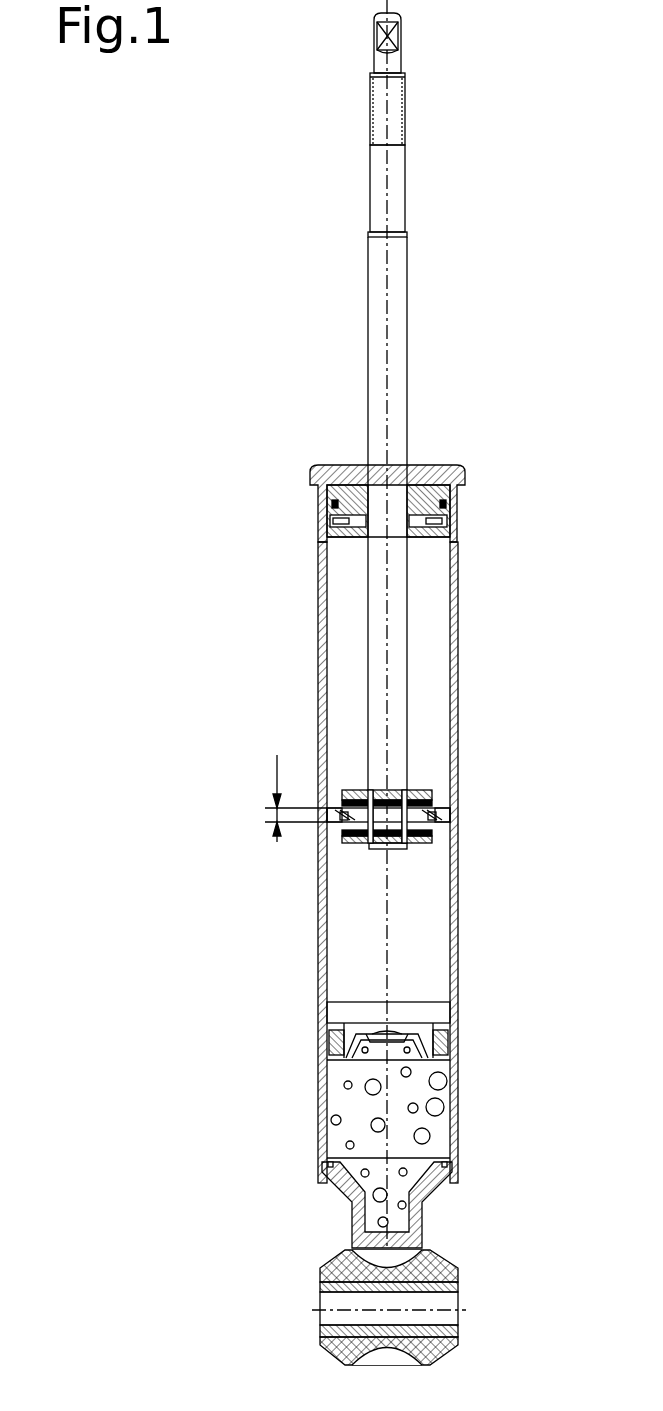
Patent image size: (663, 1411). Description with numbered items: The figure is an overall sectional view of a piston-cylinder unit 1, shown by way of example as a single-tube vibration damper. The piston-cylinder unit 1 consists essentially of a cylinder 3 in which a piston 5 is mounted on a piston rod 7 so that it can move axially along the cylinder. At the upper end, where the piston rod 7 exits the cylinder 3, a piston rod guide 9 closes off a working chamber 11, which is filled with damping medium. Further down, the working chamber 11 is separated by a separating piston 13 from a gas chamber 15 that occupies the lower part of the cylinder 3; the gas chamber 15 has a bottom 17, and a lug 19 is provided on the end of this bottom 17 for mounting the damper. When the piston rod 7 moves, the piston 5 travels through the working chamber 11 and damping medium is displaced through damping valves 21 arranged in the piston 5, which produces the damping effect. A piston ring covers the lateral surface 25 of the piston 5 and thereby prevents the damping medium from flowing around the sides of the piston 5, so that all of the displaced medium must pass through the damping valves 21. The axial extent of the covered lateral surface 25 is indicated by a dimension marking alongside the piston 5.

The piston-cylinder unit 1 is at (158, 873).
The cylinder 3 is at (455, 670).
The piston 5 is at (452, 812).
The piston rod 7 is at (381, 300).
The piston rod guide 9 is at (463, 498).
The working chamber 11 is at (340, 678).
The separating piston 13 is at (410, 1040).
The gas chamber 15 is at (418, 1123).
The bottom 17 is at (448, 1185).
The lug 19 is at (455, 1275).
The damping valves 21 is at (338, 838).
The lateral surface 25 is at (279, 798).